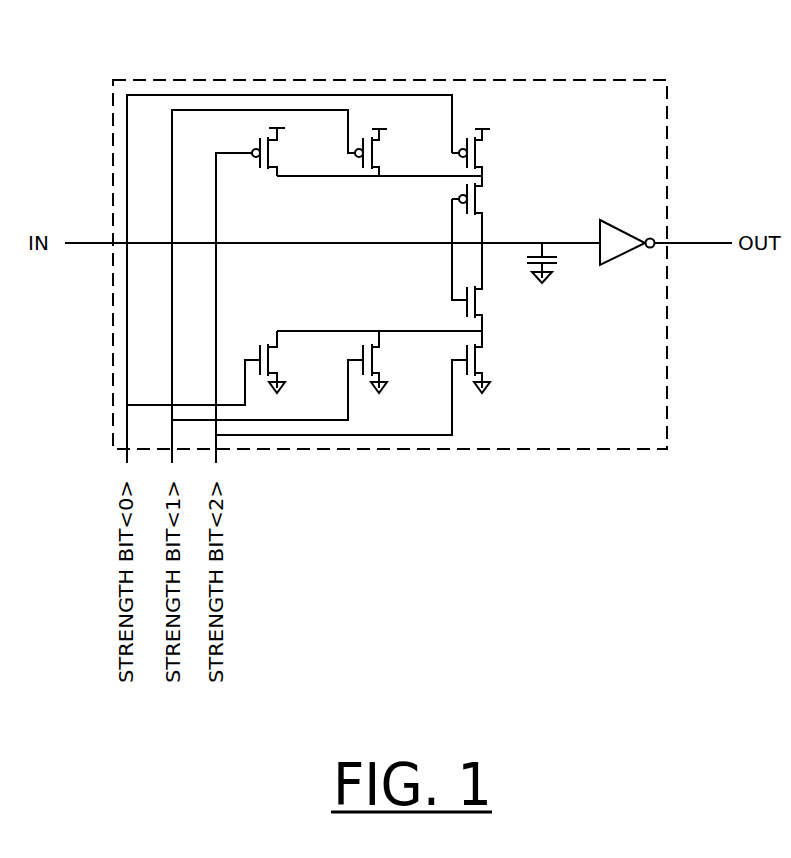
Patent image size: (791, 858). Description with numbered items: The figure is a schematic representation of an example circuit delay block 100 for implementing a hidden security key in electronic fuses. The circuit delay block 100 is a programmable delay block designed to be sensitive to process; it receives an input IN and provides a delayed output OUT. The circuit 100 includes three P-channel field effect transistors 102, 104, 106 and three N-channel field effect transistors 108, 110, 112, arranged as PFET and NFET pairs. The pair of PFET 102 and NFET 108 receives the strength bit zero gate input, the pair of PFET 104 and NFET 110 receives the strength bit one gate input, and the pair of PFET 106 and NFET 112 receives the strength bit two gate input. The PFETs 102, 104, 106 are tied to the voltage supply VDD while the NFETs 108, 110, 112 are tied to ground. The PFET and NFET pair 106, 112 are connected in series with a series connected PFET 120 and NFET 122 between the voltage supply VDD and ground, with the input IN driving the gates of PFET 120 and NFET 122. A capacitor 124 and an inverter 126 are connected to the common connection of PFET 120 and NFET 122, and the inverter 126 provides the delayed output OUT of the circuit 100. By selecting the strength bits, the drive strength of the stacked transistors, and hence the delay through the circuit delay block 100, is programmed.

The circuit delay block 100 is at (421, 33).
The P-channel field effect transistor 102 is at (265, 144).
The P-channel field effect transistor 104 is at (386, 140).
The P-channel field effect transistor 106 is at (489, 140).
The N-channel field effect transistor 108 is at (287, 362).
The N-channel field effect transistor 110 is at (390, 362).
The N-channel field effect transistor 112 is at (493, 362).
The PFET 120 is at (489, 209).
The NFET 122 is at (493, 287).
The capacitor 124 is at (522, 263).
The inverter 126 is at (666, 256).